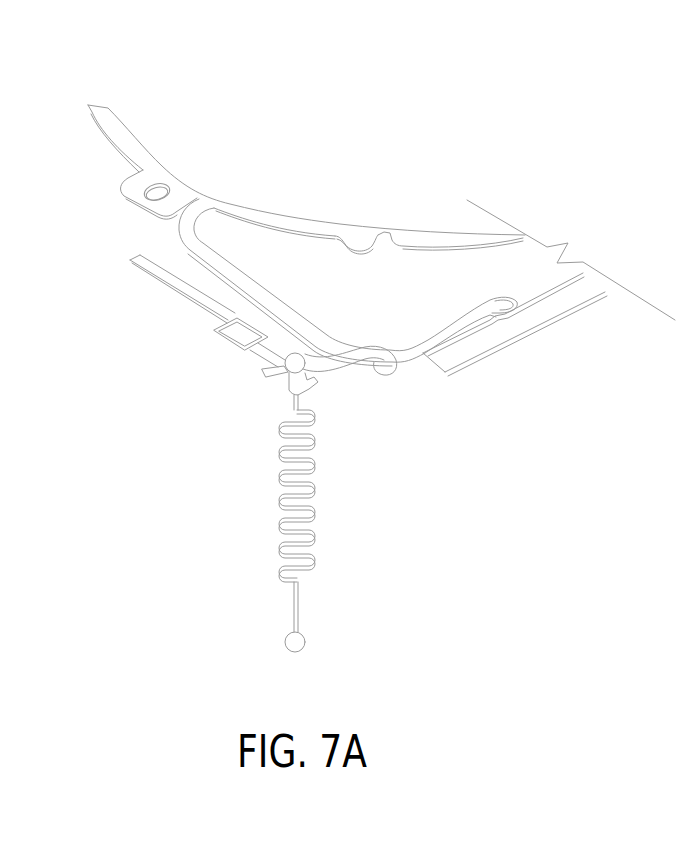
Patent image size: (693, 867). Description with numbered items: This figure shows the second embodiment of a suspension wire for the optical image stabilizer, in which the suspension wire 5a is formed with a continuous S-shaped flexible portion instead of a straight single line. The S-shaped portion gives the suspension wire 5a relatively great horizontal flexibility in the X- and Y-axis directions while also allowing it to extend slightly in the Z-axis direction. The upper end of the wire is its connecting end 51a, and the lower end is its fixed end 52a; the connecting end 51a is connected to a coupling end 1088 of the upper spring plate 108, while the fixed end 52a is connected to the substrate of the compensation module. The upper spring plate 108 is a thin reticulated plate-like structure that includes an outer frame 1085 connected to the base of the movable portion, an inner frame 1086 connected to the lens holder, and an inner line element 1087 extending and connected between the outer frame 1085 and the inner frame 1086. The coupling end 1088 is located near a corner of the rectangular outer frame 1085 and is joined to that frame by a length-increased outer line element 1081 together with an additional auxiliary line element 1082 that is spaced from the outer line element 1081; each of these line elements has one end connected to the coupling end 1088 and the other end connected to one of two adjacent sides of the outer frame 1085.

The upper spring plate 108 is at (493, 352).
The outer line element 1081 is at (358, 380).
The additional auxiliary line element 1082 is at (213, 345).
The outer frame 1085 is at (548, 302).
The inner frame 1086 is at (405, 246).
The inner line element 1087 is at (282, 274).
The coupling end 1088 is at (305, 390).
The suspension wire 5a is at (278, 507).
The connecting end 51a is at (290, 368).
The fixed end 52a is at (290, 634).